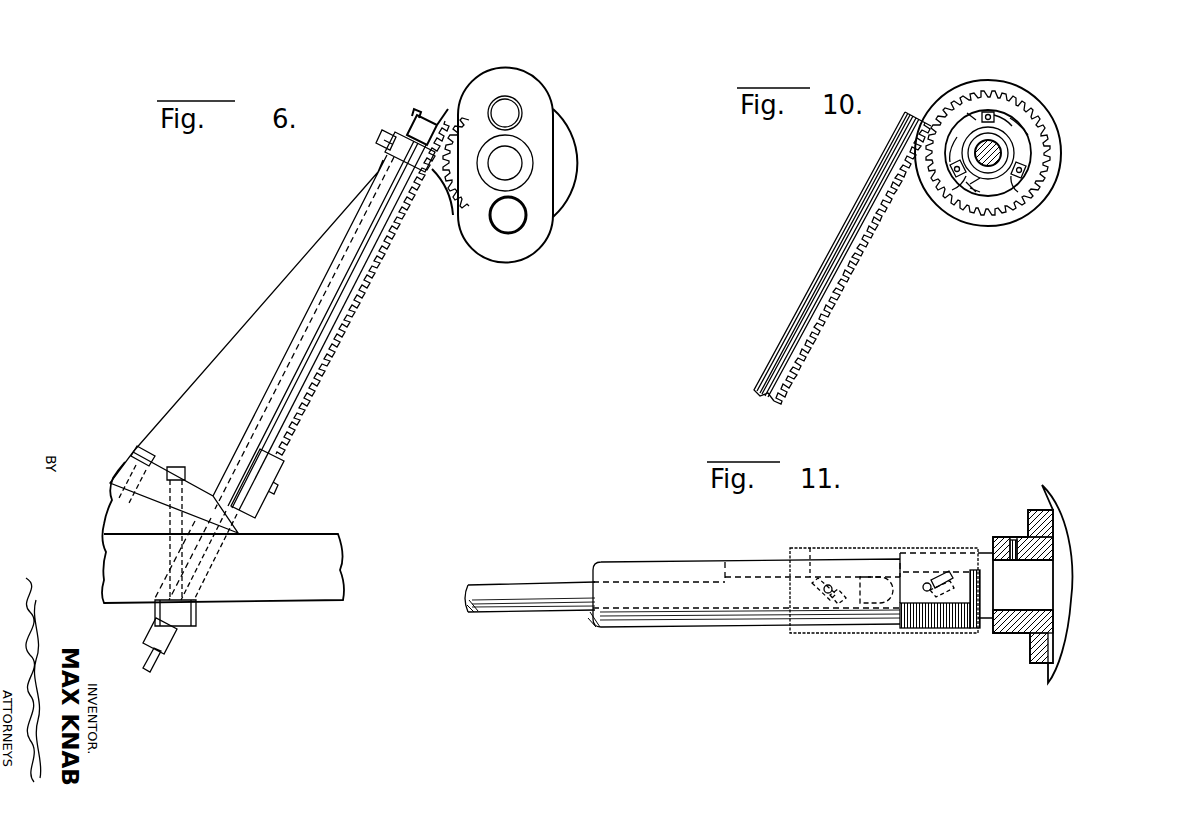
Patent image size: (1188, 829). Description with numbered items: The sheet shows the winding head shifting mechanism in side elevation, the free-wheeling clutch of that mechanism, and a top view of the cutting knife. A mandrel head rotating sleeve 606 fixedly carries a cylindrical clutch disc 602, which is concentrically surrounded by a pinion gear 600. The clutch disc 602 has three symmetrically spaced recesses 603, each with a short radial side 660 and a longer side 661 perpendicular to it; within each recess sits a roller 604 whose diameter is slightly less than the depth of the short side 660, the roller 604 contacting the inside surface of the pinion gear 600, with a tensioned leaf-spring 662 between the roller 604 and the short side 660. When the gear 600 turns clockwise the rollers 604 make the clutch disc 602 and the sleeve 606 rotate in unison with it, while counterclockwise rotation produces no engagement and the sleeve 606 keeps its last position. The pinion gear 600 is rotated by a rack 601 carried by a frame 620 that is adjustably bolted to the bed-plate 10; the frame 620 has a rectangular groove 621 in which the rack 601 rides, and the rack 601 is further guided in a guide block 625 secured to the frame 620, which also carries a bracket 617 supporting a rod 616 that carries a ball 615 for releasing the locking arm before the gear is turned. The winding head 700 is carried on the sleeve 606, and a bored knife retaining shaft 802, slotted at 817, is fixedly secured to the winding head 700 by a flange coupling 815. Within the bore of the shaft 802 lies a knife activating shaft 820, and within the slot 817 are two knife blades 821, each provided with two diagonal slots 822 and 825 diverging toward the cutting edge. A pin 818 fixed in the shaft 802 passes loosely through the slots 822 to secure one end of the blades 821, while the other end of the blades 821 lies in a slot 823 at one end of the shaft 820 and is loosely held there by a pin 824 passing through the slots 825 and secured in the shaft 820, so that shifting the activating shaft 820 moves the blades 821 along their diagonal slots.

In FIG. 6, the bed-plate 10 is at (318, 534).
In FIG. 6, the pinion gear 600 is at (442, 198).
In FIG. 10, the pinion gear 600 is at (1058, 147).
In FIG. 6, the rack 601 is at (319, 393).
In FIG. 10, the rack 601 is at (797, 343).
In FIG. 10, the clutch disc 602 is at (1022, 140).
In FIG. 10, the recesses 603 is at (994, 113).
In FIG. 10, the roller 604 is at (986, 114).
In FIG. 10, the mandrel head rotating sleeve 606 is at (1012, 158).
In FIG. 6, the ball 615 is at (440, 117).
In FIG. 6, the rod 616 is at (357, 317).
In FIG. 6, the bracket 617 is at (402, 133).
In FIG. 6, the frame 620 is at (237, 333).
In FIG. 6, the rectangular groove 621 is at (303, 360).
In FIG. 6, the guide block 625 is at (291, 471).
In FIG. 10, the short radial side 660 is at (967, 113).
In FIG. 10, the longer side 661 is at (957, 137).
In FIG. 10, the leaf-spring 662 is at (970, 188).
In FIG. 6, the winding head 700 is at (557, 172).
In FIG. 11, the knife retaining shaft 802 is at (625, 628).
In FIG. 6, the flange coupling 815 is at (557, 212).
In FIG. 11, the flange coupling 815 is at (1033, 641).
In FIG. 11, the slot 817 is at (688, 627).
In FIG. 11, the pin 818 is at (927, 584).
In FIG. 11, the knife activating shaft 820 is at (520, 613).
In FIG. 11, the knife blades 821 is at (876, 518).
In FIG. 11, the diagonal slots 822 is at (947, 576).
In FIG. 11, the slot 823 is at (763, 612).
In FIG. 11, the pin 824 is at (837, 618).
In FIG. 11, the diagonal slots 825 is at (810, 555).